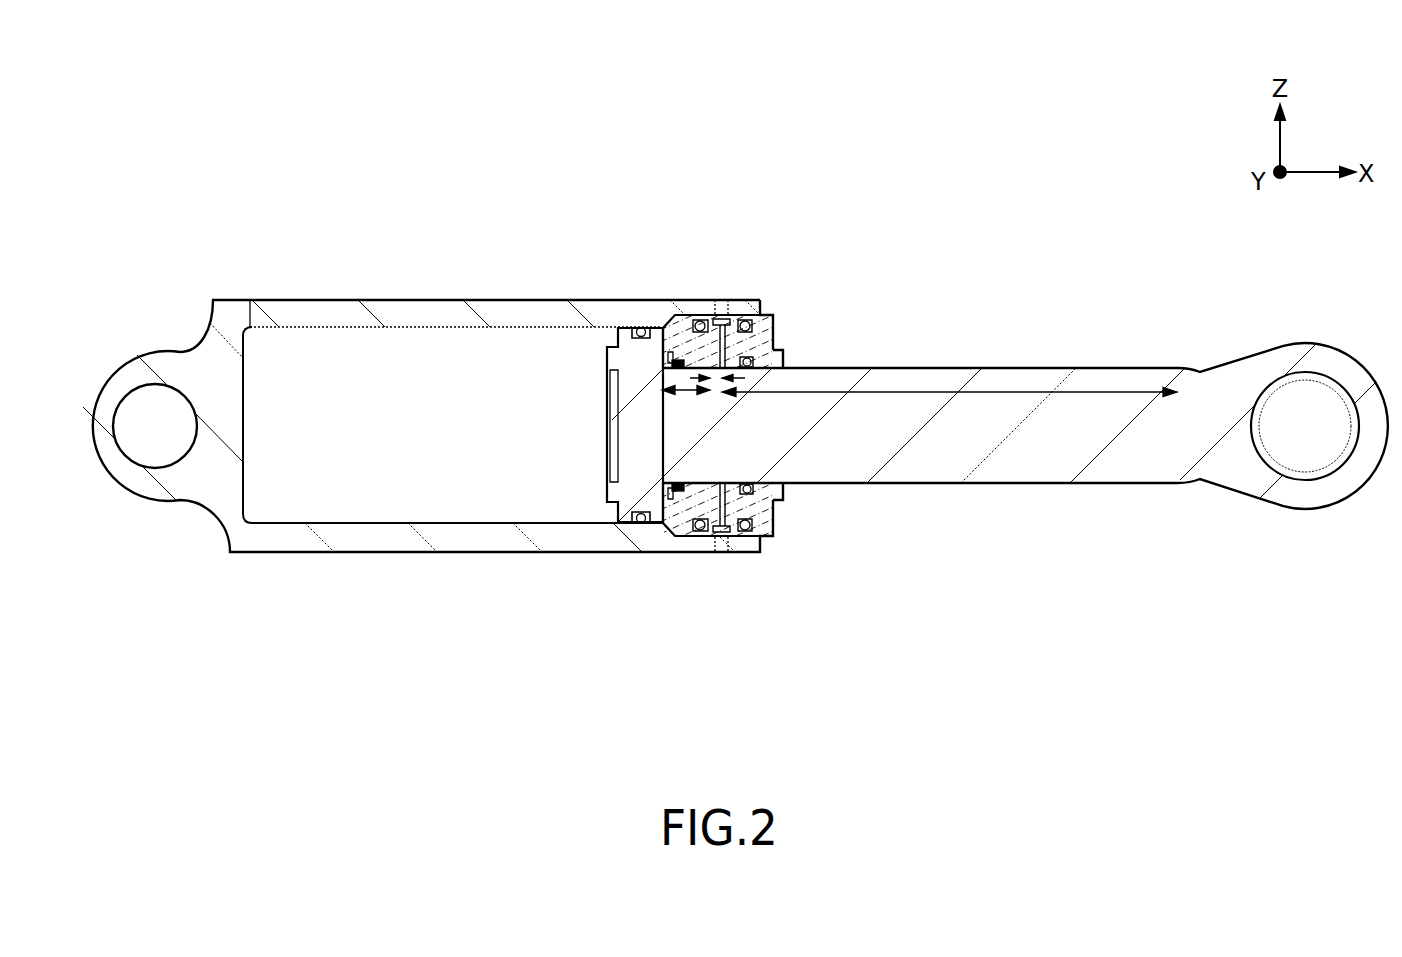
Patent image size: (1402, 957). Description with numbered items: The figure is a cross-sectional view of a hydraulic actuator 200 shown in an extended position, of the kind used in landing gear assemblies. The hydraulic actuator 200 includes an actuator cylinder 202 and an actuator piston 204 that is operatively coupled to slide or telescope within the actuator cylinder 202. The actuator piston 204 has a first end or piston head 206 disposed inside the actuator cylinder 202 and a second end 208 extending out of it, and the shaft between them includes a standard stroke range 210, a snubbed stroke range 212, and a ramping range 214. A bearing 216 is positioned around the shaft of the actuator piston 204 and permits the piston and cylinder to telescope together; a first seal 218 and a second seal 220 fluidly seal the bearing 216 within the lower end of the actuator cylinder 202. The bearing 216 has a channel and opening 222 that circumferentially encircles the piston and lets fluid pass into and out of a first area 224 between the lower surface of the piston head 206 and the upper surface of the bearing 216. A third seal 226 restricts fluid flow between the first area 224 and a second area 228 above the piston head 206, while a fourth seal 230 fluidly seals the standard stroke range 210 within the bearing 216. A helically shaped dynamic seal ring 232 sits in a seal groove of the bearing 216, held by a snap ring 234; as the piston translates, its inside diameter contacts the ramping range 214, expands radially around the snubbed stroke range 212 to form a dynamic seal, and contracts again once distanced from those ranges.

The hydraulic actuator 200 is at (242, 198).
The actuator cylinder 202 is at (418, 545).
The actuator piston 204 is at (1052, 470).
The piston head 206 is at (625, 492).
The second end 208 is at (1362, 473).
The standard stroke range 210 is at (1047, 392).
The snubbed stroke range 212 is at (685, 393).
The ramping range 214 is at (718, 382).
The bearing 216 is at (783, 487).
The first seal 218 is at (687, 327).
The second seal 220 is at (743, 325).
The channel and opening 222 is at (752, 358).
The first area 224 is at (655, 522).
The third seal 226 is at (642, 327).
The second area 228 is at (362, 483).
The fourth seal 230 is at (778, 350).
The helically shaped dynamic seal ring 232 is at (678, 488).
The snap ring 234 is at (672, 493).